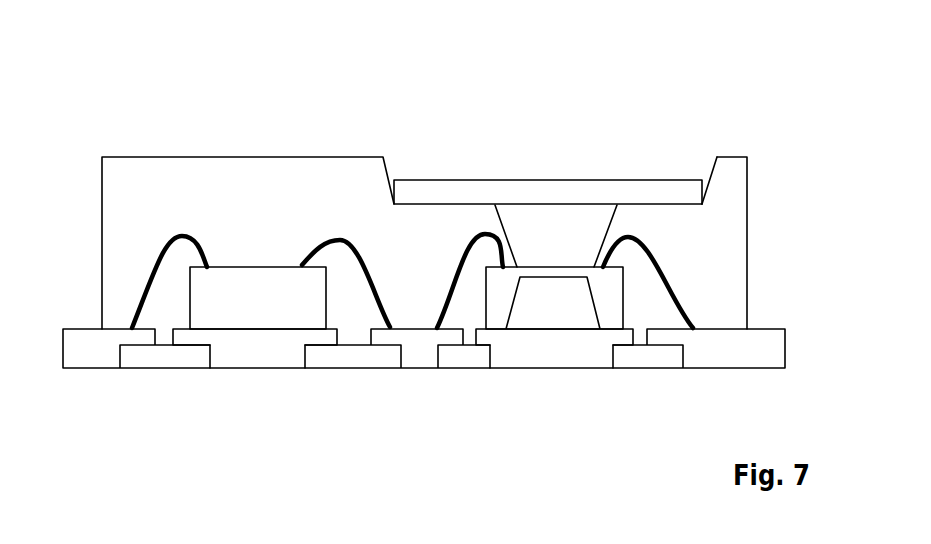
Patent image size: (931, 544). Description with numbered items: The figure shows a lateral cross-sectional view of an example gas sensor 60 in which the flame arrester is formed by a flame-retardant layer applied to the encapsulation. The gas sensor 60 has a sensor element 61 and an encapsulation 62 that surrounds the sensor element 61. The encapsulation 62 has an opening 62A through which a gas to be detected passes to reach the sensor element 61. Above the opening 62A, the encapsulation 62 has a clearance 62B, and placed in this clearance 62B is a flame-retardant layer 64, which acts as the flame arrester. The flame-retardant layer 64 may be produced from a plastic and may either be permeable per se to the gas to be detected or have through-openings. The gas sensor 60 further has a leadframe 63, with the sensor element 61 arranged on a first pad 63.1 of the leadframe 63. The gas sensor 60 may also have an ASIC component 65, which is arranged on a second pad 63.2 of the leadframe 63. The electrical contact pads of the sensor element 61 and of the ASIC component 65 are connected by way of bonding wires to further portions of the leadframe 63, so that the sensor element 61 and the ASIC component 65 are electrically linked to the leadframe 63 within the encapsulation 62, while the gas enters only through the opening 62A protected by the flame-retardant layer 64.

The gas sensor 60 is at (685, 32).
The sensor element 61 is at (608, 292).
The encapsulation 62 is at (292, 170).
The opening 62A is at (602, 230).
The clearance 62B is at (708, 203).
The leadframe 63 is at (722, 353).
The first pad 63.1 is at (530, 353).
The second pad 63.2 is at (224, 357).
The flame-retardant layer 64 is at (463, 187).
The ASIC component 65 is at (259, 313).